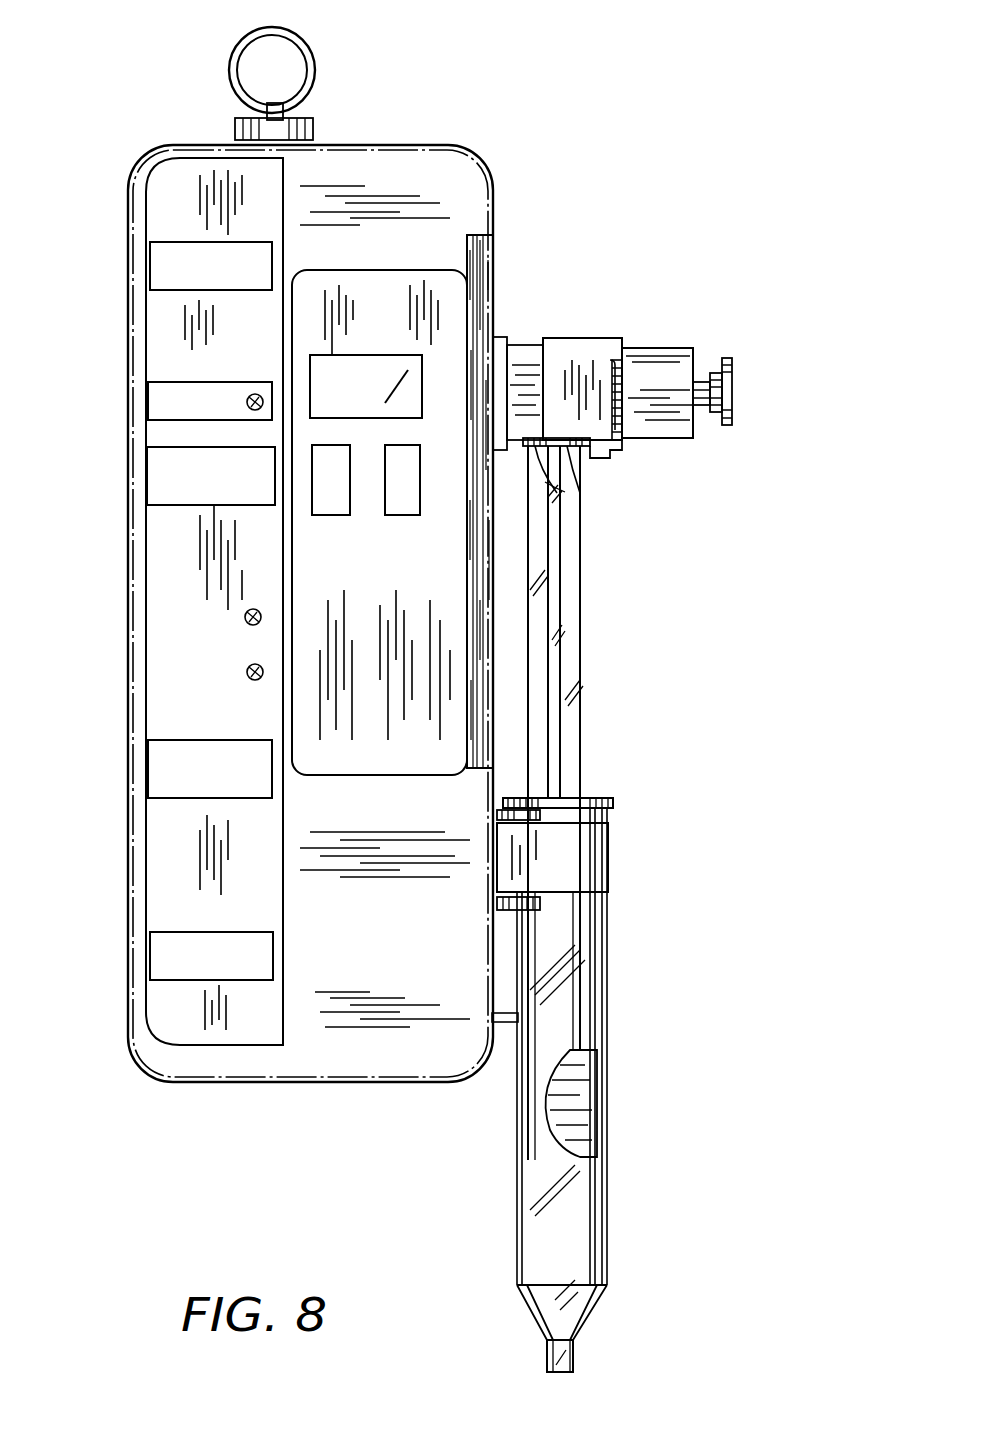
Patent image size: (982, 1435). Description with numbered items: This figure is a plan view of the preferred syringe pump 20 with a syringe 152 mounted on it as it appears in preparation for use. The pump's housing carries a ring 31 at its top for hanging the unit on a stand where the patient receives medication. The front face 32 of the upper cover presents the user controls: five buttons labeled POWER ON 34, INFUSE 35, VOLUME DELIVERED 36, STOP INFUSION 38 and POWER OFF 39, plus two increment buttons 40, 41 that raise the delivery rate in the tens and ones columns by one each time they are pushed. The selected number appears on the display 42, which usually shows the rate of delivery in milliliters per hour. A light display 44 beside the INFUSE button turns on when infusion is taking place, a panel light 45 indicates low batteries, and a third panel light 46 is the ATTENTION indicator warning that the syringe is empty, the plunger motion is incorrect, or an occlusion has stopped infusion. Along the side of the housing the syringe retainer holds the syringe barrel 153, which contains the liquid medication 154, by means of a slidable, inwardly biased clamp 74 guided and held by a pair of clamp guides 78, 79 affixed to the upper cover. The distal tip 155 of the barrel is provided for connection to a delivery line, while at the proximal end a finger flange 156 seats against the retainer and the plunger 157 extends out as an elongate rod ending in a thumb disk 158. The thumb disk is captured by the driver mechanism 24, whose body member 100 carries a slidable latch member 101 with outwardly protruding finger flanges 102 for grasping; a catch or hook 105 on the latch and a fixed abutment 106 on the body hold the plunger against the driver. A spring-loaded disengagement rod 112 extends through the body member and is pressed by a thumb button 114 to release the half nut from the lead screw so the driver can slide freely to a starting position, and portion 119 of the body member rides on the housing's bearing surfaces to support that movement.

The syringe pump 20 is at (472, 127).
The driver mechanism 24 is at (555, 331).
The ring 31 is at (312, 52).
The front face 32 is at (335, 1053).
The POWER ON button 34 is at (158, 270).
The INFUSE button 35 is at (150, 407).
The VOLUME DELIVERED button 36 is at (148, 466).
The STOP INFUSION button 38 is at (158, 771).
The POWER OFF button 39 is at (158, 954).
The increment button 40 is at (332, 515).
The increment button 41 is at (402, 515).
The display 42 is at (378, 355).
The light display 44 is at (254, 394).
The panel light 45 is at (255, 609).
The panel light 46 is at (247, 672).
The slidable clamp 74 is at (567, 863).
The clamp guide 78 is at (517, 810).
The clamp guide 79 is at (540, 906).
The body member 100 is at (683, 428).
The latch member 101 is at (577, 352).
The finger flanges 102 is at (617, 377).
The catch or hook 105 is at (585, 460).
The abutment 106 is at (567, 502).
The disengagement rod 112 is at (703, 383).
The thumb button 114 is at (730, 390).
The portion of body member 119 is at (494, 318).
The syringe 152 is at (622, 978).
The syringe barrel 153 is at (603, 1023).
The liquid medication 154 is at (578, 1110).
The distal tip 155 is at (573, 1360).
The finger flange 156 is at (597, 800).
The plunger 157 is at (567, 603).
The thumb disk 158 is at (550, 483).